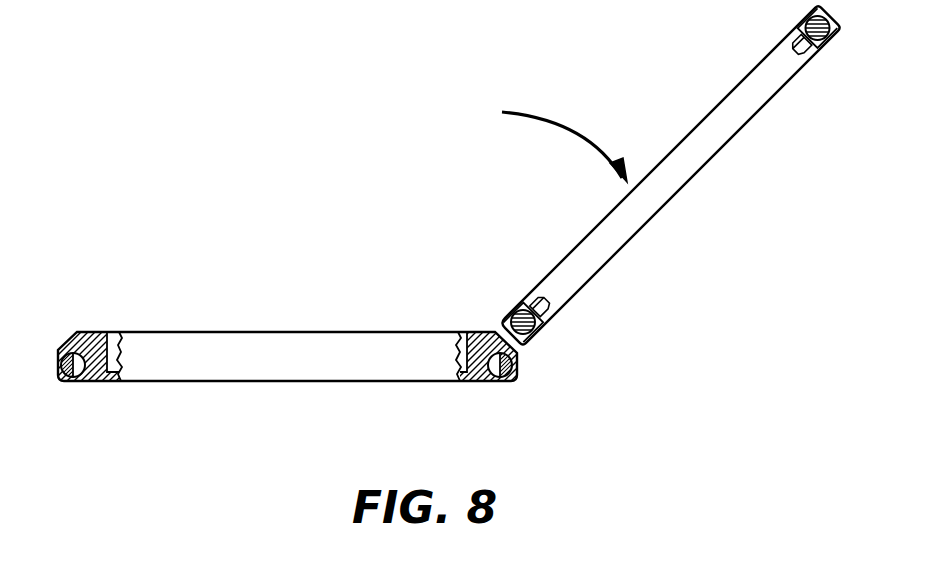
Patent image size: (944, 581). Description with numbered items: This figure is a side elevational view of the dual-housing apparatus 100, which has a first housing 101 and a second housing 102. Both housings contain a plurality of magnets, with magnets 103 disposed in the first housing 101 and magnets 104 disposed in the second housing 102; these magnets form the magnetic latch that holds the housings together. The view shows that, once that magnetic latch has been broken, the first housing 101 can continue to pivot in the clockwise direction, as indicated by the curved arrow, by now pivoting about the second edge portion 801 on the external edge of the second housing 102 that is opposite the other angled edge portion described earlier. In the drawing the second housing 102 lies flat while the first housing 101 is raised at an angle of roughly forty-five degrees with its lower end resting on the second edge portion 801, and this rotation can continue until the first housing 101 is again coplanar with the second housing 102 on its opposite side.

The dual-housing apparatus 100 is at (443, 465).
The first housing 101 is at (697, 175).
The second housing 102 is at (285, 359).
The magnets 103 is at (525, 338).
The magnets 104 is at (491, 368).
The second edge portion 801 is at (479, 343).